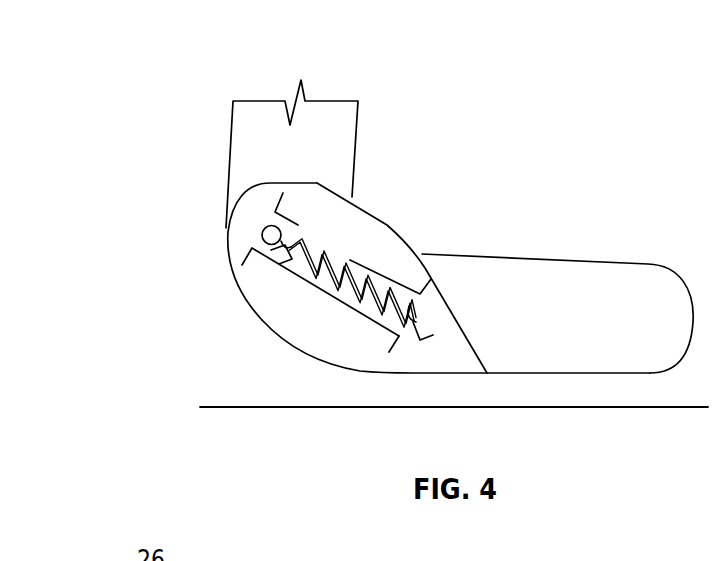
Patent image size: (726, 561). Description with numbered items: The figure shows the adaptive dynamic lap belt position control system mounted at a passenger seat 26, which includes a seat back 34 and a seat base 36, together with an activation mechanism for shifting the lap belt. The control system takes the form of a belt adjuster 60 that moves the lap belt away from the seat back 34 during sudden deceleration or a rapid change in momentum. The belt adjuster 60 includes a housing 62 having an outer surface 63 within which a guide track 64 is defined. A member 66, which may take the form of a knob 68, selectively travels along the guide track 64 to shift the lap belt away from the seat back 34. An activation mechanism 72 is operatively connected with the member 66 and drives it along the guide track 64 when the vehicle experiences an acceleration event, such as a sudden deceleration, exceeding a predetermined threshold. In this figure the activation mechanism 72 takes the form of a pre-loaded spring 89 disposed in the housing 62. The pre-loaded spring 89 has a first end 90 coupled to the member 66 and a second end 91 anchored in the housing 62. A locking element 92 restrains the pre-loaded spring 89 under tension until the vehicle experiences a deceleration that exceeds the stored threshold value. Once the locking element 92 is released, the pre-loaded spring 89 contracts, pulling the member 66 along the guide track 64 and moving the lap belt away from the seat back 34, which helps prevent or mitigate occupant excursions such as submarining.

The passenger seat 26 is at (207, 104).
The seat back 34 is at (238, 149).
The belt adjuster 60 is at (216, 241).
The housing 62 is at (438, 363).
The outer surface 63 is at (415, 362).
The seat base 36 is at (645, 355).
The guide track 64 is at (347, 298).
The member 66 is at (258, 229).
The knob 68 is at (280, 229).
The activation mechanism 72 is at (384, 275).
The pre-loaded spring 89 is at (363, 338).
The first end 90 is at (352, 195).
The second end 91 is at (422, 312).
The locking element 92 is at (276, 263).